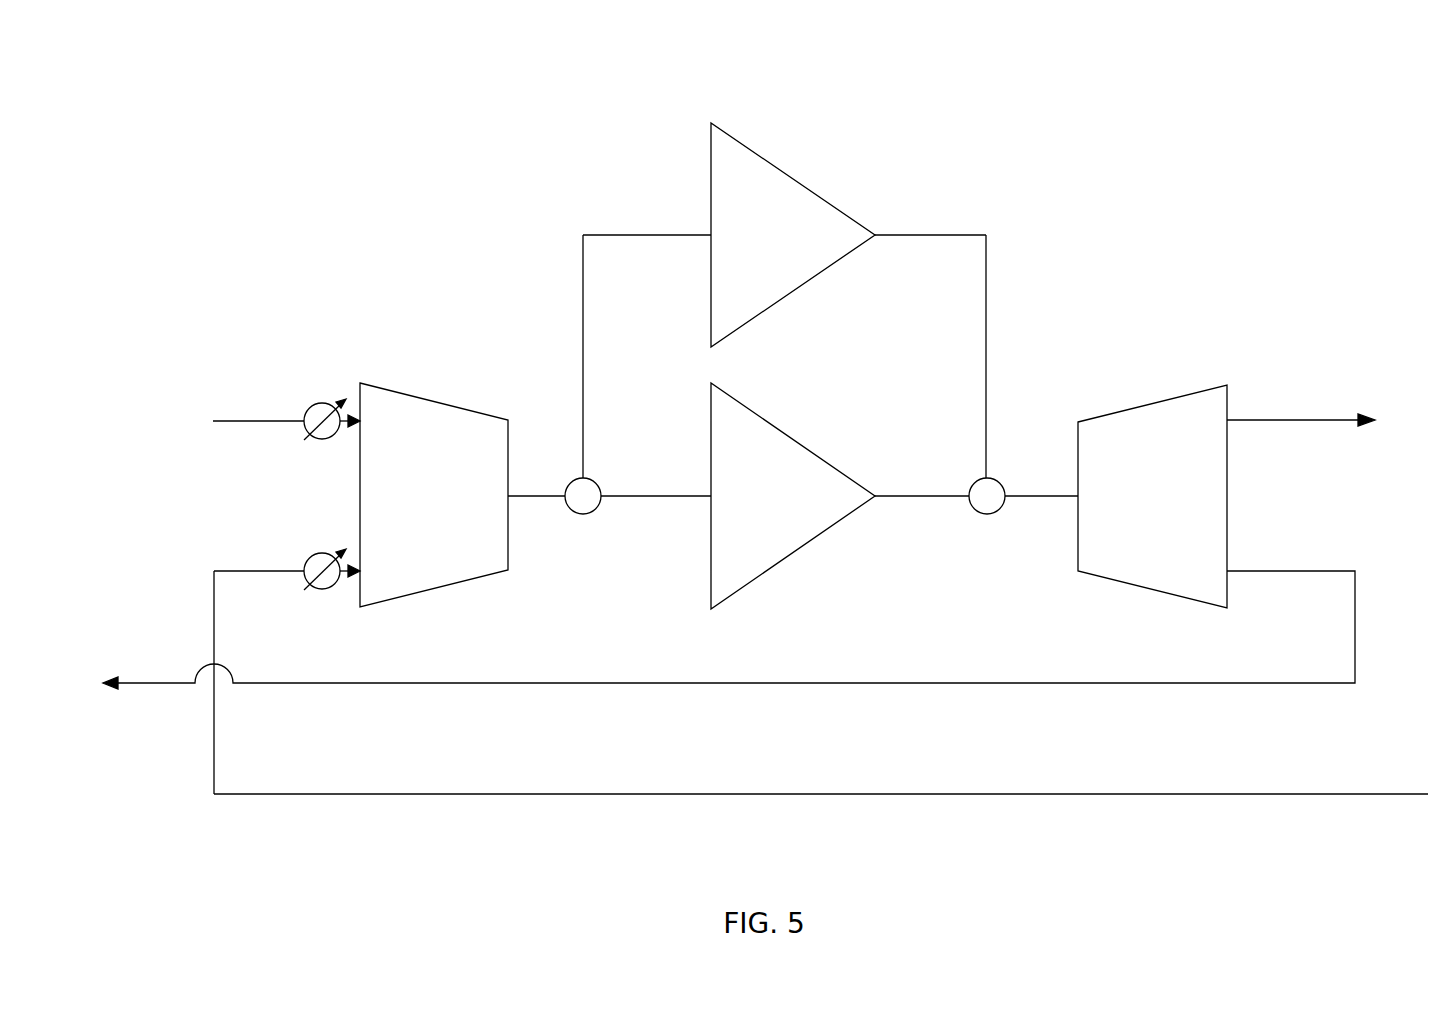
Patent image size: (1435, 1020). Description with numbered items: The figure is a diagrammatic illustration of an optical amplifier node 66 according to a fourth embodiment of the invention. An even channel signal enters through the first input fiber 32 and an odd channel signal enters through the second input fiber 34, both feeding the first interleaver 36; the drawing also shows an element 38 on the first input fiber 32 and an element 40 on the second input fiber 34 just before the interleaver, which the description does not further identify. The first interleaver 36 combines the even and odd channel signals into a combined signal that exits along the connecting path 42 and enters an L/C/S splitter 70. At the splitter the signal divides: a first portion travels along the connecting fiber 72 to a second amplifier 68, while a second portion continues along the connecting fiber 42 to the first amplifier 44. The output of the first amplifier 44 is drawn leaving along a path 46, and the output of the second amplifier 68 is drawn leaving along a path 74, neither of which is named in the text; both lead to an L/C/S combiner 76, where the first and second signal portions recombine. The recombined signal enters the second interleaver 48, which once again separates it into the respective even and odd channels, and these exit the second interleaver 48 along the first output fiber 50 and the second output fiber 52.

The optical amplifier node 66 is at (410, 190).
The first input fiber 32 is at (287, 419).
The second input fiber 34 is at (287, 571).
The first variable attenuator 38 is at (323, 403).
The second variable attenuator 40 is at (323, 553).
The first interleaver 36 is at (416, 510).
The connecting path 42 is at (692, 495).
The L/C/S splitter 70 is at (580, 514).
The first amplifier 44 is at (751, 510).
The amplifier output path 46 is at (950, 495).
The L/C/S combiner 76 is at (987, 514).
The connecting fiber 72 is at (647, 233).
The second amplifier 68 is at (751, 250).
The auxiliary output path 74 is at (932, 233).
The second interleaver 48 is at (1136, 510).
The first output fiber 50 is at (1282, 420).
The second output fiber 52 is at (1292, 571).